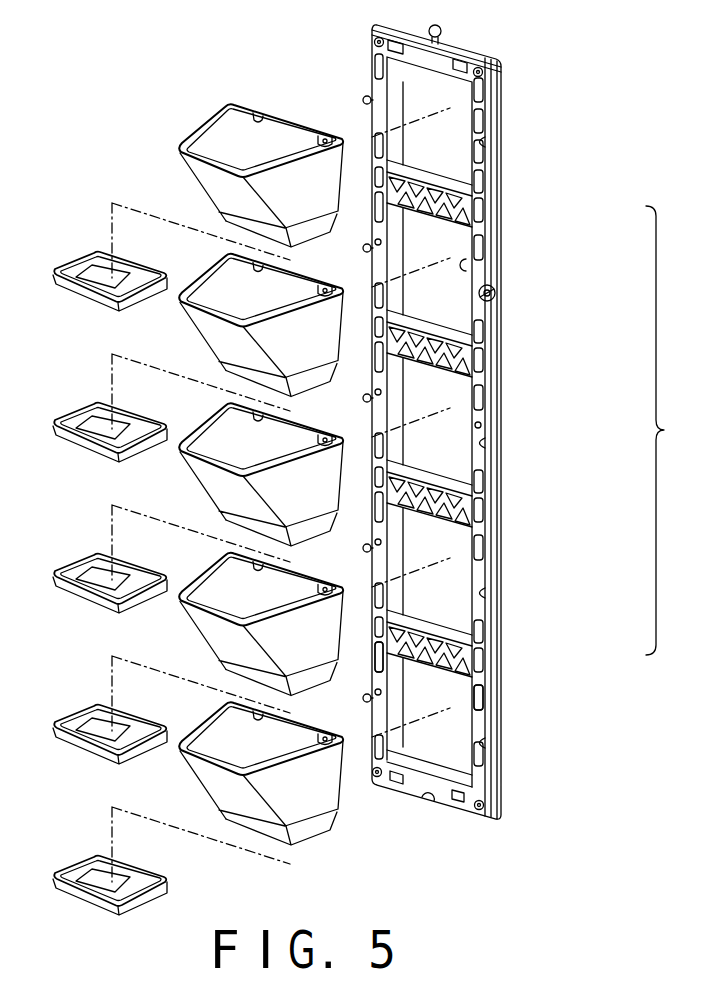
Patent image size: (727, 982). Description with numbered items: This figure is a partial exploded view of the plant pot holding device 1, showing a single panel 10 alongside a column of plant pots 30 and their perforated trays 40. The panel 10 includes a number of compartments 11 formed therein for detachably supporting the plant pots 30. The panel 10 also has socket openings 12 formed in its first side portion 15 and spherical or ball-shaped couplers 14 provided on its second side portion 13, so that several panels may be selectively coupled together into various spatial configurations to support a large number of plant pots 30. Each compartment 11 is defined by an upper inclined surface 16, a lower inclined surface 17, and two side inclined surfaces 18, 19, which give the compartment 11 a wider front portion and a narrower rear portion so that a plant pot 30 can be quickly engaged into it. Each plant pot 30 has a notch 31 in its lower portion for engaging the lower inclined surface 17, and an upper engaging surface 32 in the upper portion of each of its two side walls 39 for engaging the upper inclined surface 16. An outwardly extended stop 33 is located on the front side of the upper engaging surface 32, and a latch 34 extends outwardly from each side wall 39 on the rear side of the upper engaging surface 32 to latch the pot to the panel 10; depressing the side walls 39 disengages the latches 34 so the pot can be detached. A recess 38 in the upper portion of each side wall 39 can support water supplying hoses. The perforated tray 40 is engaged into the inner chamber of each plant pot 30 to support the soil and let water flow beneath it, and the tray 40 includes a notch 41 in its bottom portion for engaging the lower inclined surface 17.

The planter assembly 1 is at (545, 57).
The panel 10 is at (497, 185).
The compartment 11 is at (450, 755).
The socket opening 12 is at (485, 443).
The second side portion 13 is at (497, 781).
The coupler 14 is at (365, 402).
The first side portion 15 is at (370, 758).
The upper inclined surface 16 is at (427, 57).
The lower inclined surface 17 is at (412, 165).
The side inclined surface 18 is at (374, 252).
The side inclined surface 19 is at (464, 268).
The plant pot 30 is at (240, 470).
The notch 31 is at (307, 827).
The upper engaging surface 32 is at (242, 106).
The stop 33 is at (220, 109).
The latch 34 is at (328, 136).
The recess 38 is at (257, 108).
The side wall 39 is at (316, 788).
The perforated tray 40 is at (166, 555).
The notch 41 is at (150, 293).